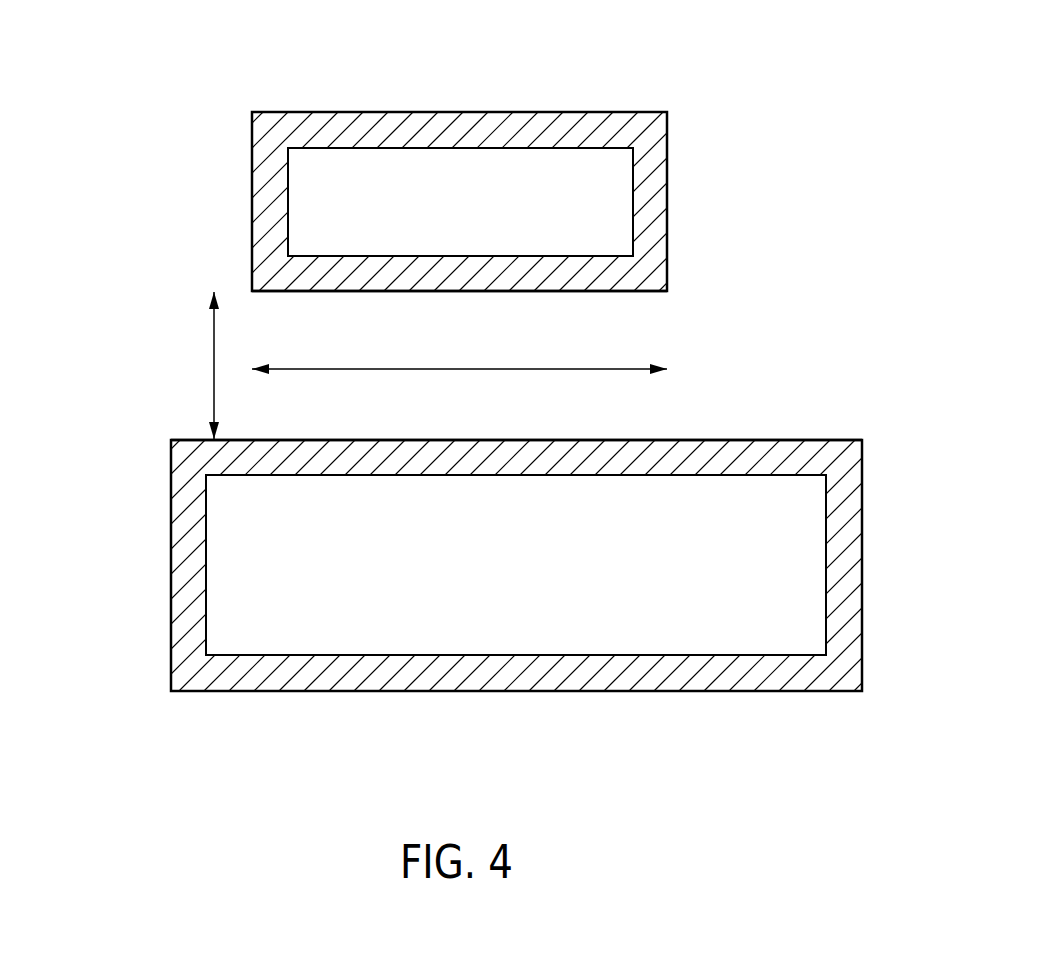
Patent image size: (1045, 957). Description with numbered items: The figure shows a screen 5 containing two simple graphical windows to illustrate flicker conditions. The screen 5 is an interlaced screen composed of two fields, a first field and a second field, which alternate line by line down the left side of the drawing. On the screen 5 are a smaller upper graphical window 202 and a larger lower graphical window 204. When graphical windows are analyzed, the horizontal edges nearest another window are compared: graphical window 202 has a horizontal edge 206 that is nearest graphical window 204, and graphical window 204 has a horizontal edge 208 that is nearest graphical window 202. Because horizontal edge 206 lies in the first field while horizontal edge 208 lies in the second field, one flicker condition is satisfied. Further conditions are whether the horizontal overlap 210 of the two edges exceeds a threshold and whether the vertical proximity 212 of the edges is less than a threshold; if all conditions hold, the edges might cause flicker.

The screen 5 is at (830, 36).
The graphical window 202 is at (557, 217).
The graphical window 204 is at (683, 550).
The horizontal edge 206 is at (383, 292).
The horizontal edge 208 is at (321, 438).
The horizontal overlap 210 is at (418, 369).
The vertical proximity 212 is at (213, 357).